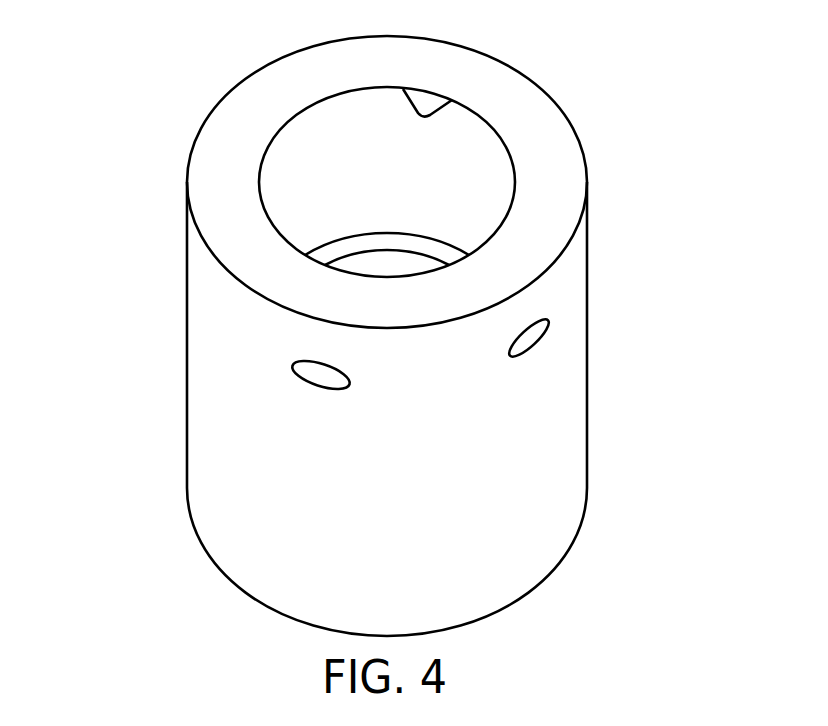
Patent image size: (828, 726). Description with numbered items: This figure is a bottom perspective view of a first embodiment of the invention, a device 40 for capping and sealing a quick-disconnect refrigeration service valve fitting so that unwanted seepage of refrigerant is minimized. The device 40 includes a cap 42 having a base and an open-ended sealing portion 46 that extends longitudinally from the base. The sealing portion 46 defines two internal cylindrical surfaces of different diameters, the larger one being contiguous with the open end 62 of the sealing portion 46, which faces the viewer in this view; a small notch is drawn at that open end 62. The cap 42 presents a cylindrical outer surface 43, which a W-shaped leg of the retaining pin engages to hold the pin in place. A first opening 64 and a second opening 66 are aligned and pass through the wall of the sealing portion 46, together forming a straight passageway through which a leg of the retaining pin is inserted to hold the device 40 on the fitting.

The device 40 is at (384, 348).
The cap 42 is at (384, 348).
The cylindrical outer surface 43 is at (188, 475).
The sealing portion 46 is at (196, 270).
The open end 62 is at (423, 117).
The first opening 64 is at (310, 379).
The second opening 66 is at (537, 340).